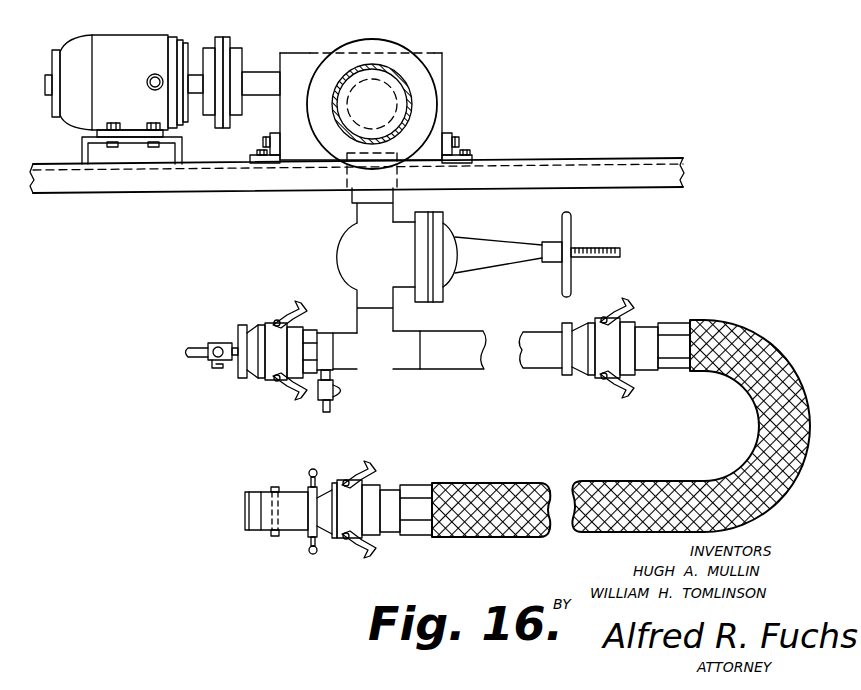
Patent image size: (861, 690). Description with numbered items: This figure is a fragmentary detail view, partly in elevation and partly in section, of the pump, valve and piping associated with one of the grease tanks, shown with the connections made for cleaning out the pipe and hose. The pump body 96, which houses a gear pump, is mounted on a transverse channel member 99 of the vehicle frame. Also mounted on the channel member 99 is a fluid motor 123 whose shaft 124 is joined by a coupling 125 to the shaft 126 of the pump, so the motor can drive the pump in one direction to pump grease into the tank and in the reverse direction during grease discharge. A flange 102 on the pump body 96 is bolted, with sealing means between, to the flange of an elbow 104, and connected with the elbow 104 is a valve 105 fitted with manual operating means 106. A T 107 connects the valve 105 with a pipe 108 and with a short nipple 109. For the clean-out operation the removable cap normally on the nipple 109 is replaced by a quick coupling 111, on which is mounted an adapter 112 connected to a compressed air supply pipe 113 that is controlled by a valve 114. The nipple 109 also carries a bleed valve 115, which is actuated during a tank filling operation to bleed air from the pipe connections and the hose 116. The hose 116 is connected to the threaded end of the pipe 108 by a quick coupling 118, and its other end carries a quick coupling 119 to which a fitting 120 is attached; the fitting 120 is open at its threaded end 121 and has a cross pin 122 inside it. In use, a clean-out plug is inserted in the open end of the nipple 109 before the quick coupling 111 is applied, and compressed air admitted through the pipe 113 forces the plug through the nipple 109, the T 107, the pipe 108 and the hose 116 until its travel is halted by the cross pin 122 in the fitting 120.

The pump body 96 is at (443, 62).
The transverse channel member 99 is at (548, 167).
The flange 102 is at (380, 46).
The elbow 104 is at (350, 182).
The valve 105 is at (363, 259).
The manual operating means 106 is at (572, 214).
The T 107 is at (384, 369).
The pipe 108 is at (468, 360).
The short nipple 109 is at (324, 338).
The quick coupling 111 is at (273, 360).
The adapter 112 is at (241, 378).
The compressed air supply pipe 113 is at (198, 356).
The valve 114 is at (222, 346).
The bleed valve 115 is at (333, 398).
The hose 116 is at (515, 486).
The quick coupling 118 is at (610, 340).
The quick coupling 119 is at (362, 498).
The fitting 120 is at (294, 521).
The threaded end 121 is at (244, 513).
The cross pin 122 is at (271, 538).
The fluid motor 123 is at (129, 41).
The shaft 124 is at (195, 75).
The coupling 125 is at (232, 52).
The pump shaft 126 is at (255, 75).